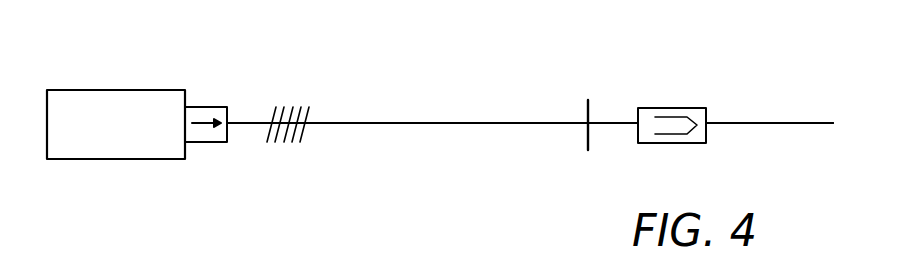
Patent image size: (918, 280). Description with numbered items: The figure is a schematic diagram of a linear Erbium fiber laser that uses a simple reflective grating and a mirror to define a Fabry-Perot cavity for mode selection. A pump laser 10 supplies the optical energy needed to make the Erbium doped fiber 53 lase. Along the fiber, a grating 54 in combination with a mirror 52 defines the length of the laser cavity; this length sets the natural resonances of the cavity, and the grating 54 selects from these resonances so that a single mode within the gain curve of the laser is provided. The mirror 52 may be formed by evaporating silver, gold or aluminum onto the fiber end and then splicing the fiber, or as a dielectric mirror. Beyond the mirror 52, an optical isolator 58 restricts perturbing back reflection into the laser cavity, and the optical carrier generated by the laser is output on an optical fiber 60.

The pump laser 10 is at (95, 90).
The mirror 52 is at (589, 102).
The Erbium doped fiber 53 is at (478, 125).
The grating 54 is at (284, 146).
The optical isolator 58 is at (700, 108).
The optical fiber 60 is at (770, 122).